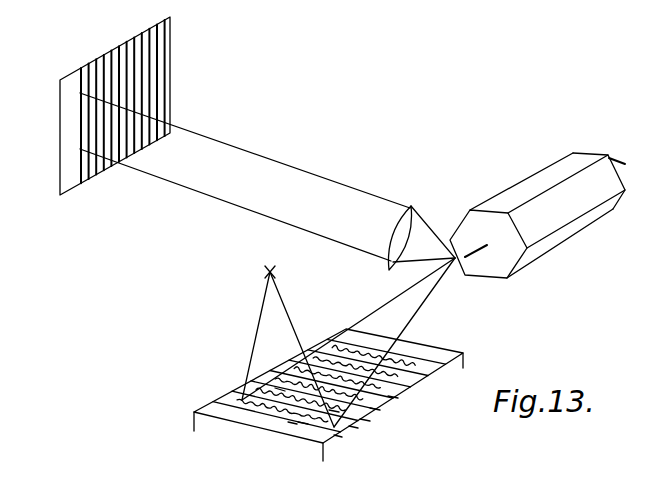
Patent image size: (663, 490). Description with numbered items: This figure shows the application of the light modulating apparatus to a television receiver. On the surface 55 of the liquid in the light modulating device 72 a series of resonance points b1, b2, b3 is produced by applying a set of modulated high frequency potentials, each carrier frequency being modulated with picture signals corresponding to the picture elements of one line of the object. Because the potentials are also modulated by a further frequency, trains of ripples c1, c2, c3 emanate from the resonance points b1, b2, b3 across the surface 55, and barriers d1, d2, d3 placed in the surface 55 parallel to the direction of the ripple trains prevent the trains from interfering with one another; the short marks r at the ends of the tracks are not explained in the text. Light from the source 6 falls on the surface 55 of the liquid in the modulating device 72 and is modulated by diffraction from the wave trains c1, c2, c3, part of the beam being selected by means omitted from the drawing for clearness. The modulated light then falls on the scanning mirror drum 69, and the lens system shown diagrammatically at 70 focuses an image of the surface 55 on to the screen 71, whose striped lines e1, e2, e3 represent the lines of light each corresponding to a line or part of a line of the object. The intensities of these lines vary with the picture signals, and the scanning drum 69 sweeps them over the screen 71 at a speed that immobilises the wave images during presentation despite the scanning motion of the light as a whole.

The screen 71 is at (127, 106).
The grating line e1 is at (79, 69).
The grating line e2 is at (88, 64).
The grating line e3 is at (95, 60).
The lens system 70 is at (409, 211).
The scanning mirror drum 69 is at (538, 174).
The light source 6 is at (267, 267).
The light modulating device 72 is at (327, 388).
The surface of the liquid 55 is at (262, 421).
The train of ripples c1 is at (303, 422).
The train of ripples c2 is at (280, 389).
The train of ripples c3 is at (334, 410).
The barrier d1 is at (292, 424).
The barrier d2 is at (354, 427).
The barrier d3 is at (374, 409).
The resonance point b1 is at (338, 436).
The resonance point b2 is at (365, 420).
The resonance point b3 is at (392, 397).
The track end mark r is at (380, 395).